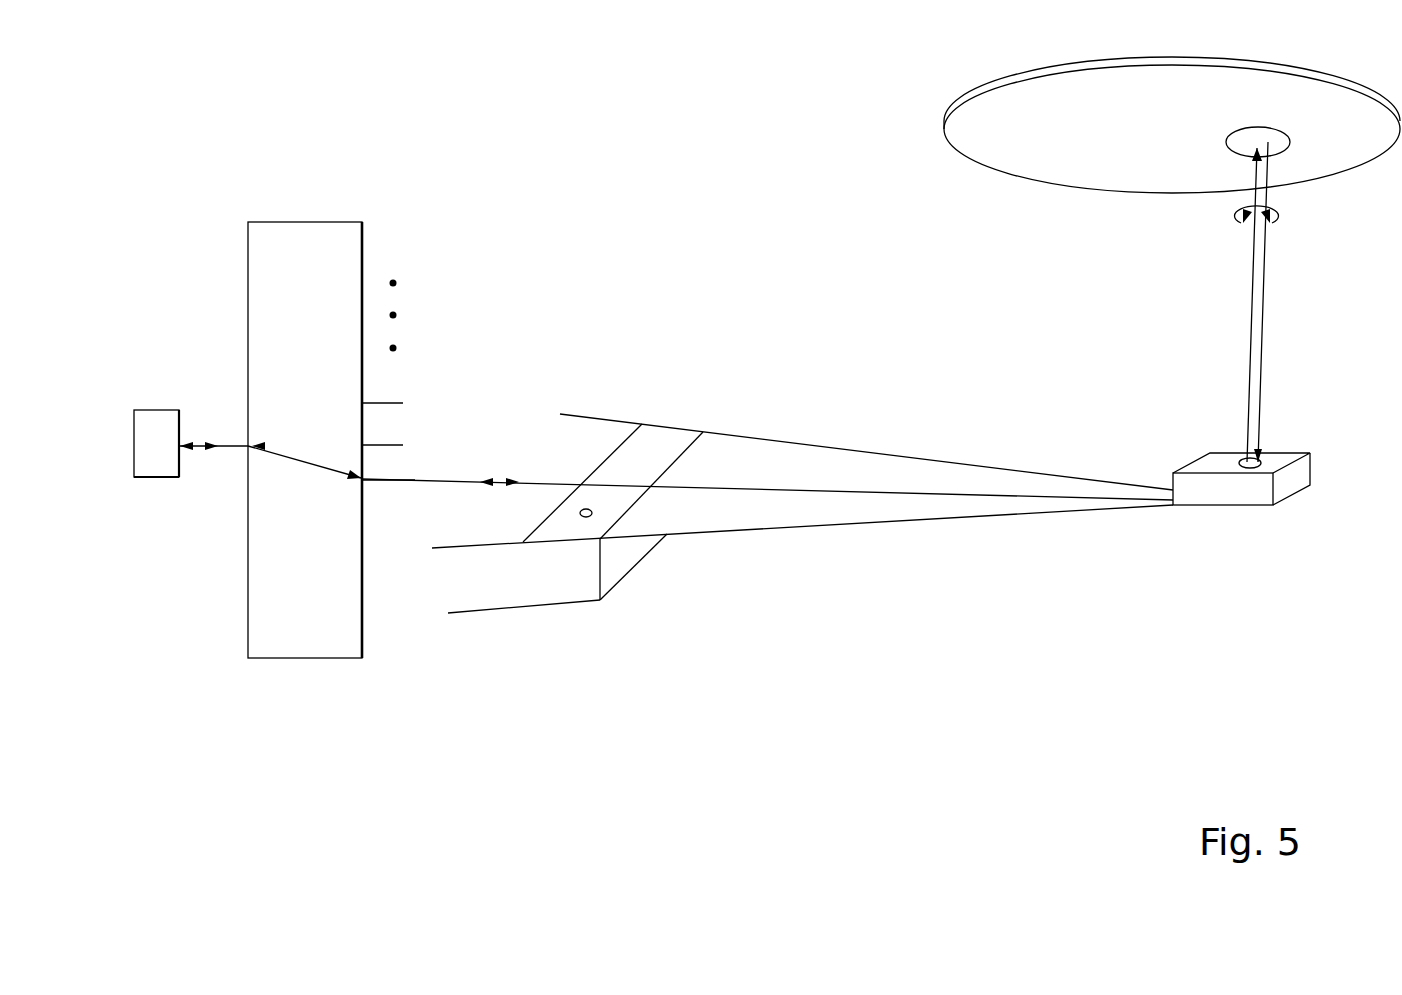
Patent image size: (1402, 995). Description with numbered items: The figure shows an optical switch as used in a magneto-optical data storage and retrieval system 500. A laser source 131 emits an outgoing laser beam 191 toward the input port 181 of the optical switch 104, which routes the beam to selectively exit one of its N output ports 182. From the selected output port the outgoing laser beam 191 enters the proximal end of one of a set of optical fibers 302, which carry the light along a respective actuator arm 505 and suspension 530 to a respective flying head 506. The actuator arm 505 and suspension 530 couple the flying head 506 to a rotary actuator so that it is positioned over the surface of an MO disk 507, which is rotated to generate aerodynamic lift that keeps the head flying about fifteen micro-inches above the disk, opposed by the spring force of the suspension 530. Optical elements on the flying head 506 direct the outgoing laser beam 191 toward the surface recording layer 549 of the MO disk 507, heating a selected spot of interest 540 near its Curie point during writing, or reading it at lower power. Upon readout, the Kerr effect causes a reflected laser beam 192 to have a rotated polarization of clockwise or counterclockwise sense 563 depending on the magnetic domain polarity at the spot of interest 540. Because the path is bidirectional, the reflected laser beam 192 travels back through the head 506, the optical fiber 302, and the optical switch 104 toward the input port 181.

The magneto-optical data storage and retrieval system 500 is at (1035, 772).
The optical switch 104 is at (327, 210).
The laser source 131 is at (171, 450).
The input port 181 is at (238, 426).
The output ports 182 is at (351, 461).
The outgoing laser beam 191 is at (216, 468).
The reflected laser beam 192 is at (493, 465).
The optical fibers 302 is at (796, 474).
The suspension 530 is at (766, 545).
The actuator arm 505 is at (518, 625).
The flying heads 506 is at (1242, 523).
The MO disks 507 is at (960, 167).
The surface recording layer 549 is at (1138, 80).
The spot of interest 540 is at (1285, 140).
The rotated polarization sense 563 is at (1281, 220).